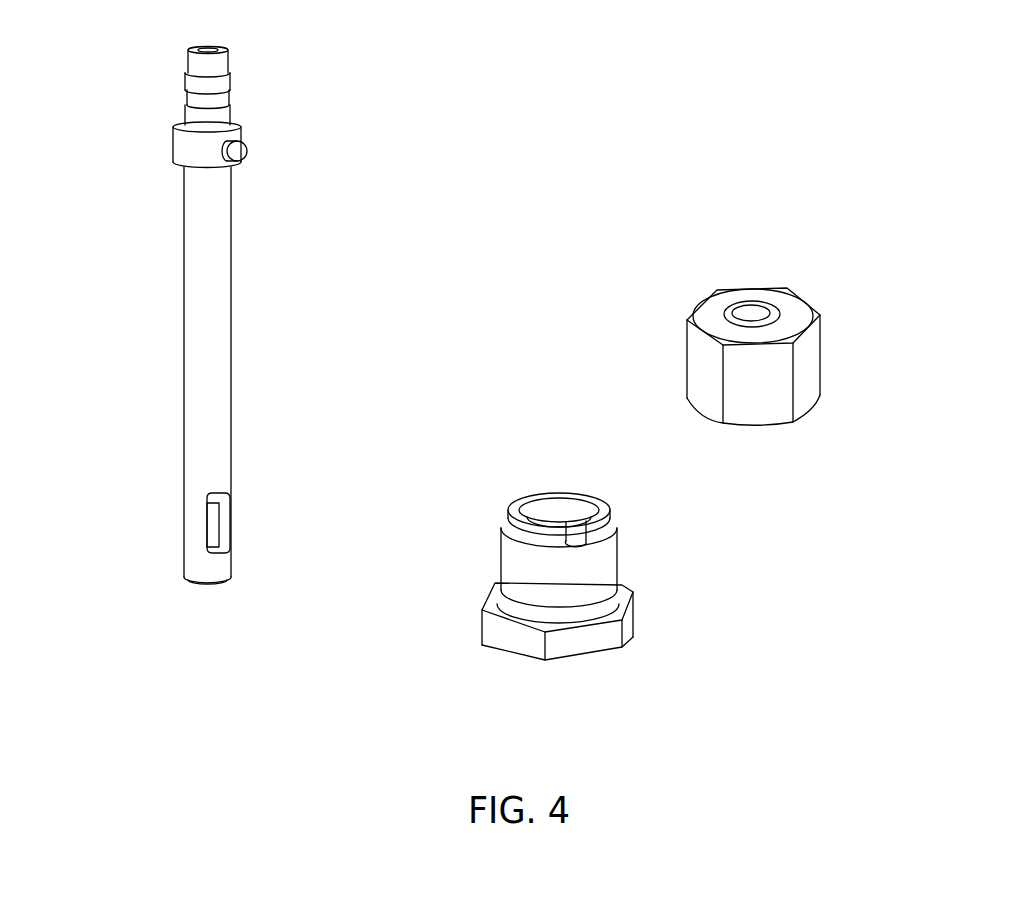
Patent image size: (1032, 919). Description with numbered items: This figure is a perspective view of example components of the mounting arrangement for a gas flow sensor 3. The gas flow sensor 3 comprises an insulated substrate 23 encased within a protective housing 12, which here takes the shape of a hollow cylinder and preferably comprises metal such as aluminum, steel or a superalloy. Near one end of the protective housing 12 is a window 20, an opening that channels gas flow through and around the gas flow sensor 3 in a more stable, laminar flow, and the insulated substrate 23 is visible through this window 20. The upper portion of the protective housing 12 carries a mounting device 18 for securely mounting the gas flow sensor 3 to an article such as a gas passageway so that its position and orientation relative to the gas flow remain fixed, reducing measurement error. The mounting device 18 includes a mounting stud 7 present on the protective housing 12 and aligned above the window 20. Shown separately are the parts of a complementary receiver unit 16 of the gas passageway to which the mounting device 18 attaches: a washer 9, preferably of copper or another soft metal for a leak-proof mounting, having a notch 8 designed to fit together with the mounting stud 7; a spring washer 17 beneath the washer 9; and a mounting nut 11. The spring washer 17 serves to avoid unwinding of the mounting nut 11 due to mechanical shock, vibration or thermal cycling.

The gas flow sensor 3 is at (137, 268).
The mounting stud 7 is at (249, 153).
The notch 8 is at (576, 547).
The washer 9 is at (575, 521).
The mounting nut 11 is at (812, 405).
The protective housing 12 is at (220, 367).
The receiver unit 16 is at (590, 703).
The spring washer 17 is at (483, 600).
The mounting device 18 is at (313, 33).
The window 20 is at (225, 500).
The insulated substrate 23 is at (213, 528).